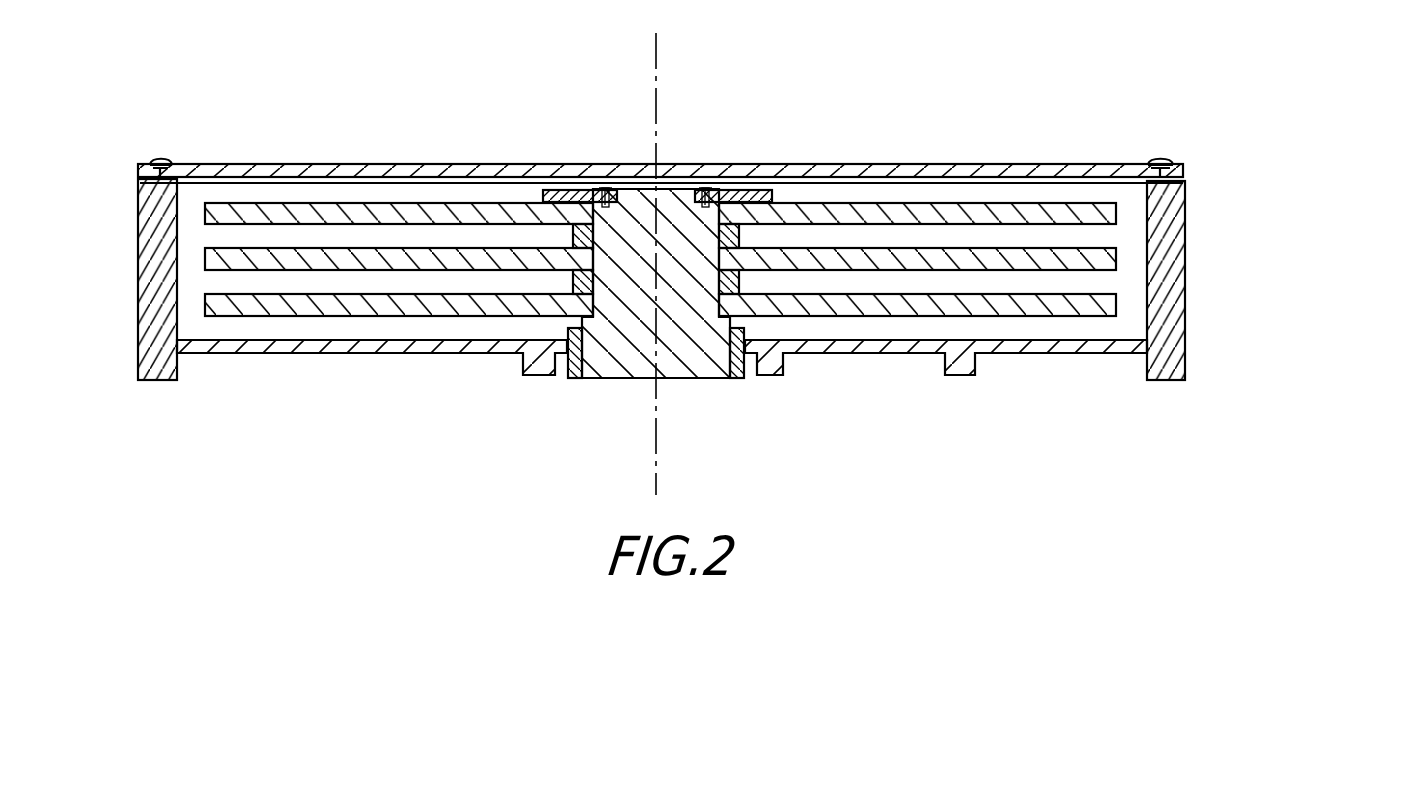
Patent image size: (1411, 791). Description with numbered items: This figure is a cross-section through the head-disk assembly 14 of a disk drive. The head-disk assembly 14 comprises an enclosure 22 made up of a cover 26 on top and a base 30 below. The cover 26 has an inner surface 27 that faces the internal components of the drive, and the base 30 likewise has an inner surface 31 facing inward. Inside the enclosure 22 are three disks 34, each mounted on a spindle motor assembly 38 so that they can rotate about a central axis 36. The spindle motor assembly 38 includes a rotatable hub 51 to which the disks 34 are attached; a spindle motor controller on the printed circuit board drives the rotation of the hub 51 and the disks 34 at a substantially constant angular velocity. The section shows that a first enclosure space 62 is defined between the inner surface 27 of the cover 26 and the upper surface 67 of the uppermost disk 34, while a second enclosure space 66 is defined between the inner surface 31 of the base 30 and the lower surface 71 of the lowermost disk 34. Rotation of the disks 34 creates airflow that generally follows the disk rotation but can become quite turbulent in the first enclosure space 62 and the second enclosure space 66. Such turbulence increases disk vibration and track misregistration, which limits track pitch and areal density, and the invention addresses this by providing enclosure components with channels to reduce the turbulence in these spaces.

The head-disk assembly 14 is at (1268, 167).
The enclosure 22 is at (1185, 225).
The cover 26 is at (876, 164).
The inner surface 27 is at (430, 178).
The base 30 is at (1190, 333).
The inner surface 31 is at (432, 340).
The disk 34 is at (205, 212).
The axis 36 is at (656, 59).
The spindle motor assembly 38 is at (747, 378).
The rotatable hub 51 is at (580, 250).
The first enclosure space 62 is at (396, 196).
The second enclosure space 66 is at (384, 327).
The upper surface 67 is at (488, 202).
The lower surface 71 is at (497, 318).